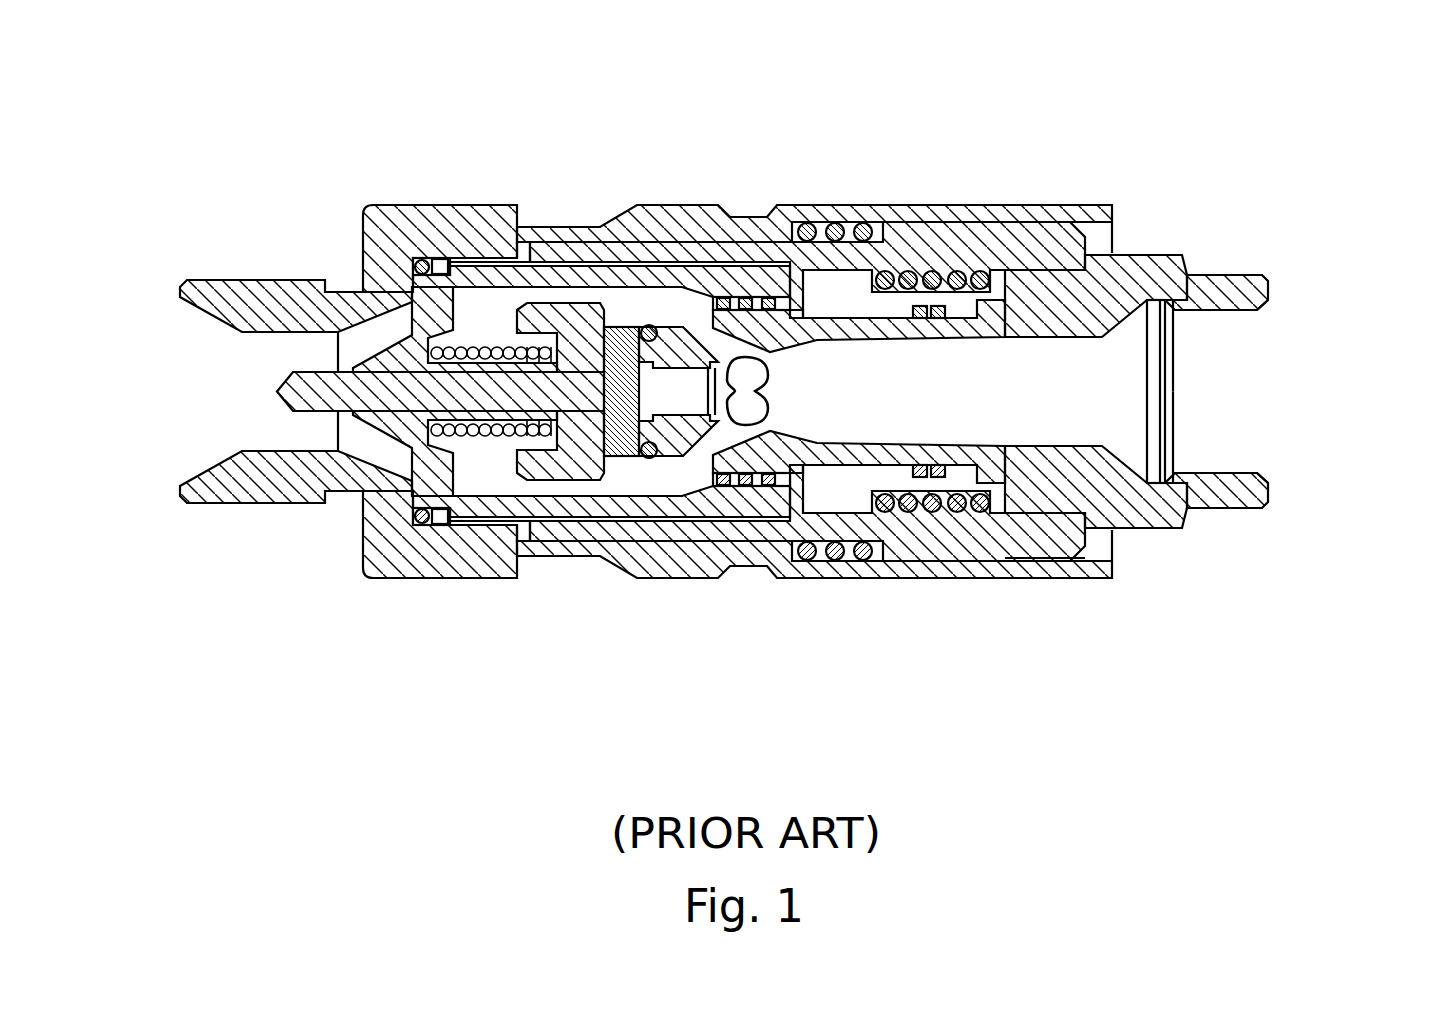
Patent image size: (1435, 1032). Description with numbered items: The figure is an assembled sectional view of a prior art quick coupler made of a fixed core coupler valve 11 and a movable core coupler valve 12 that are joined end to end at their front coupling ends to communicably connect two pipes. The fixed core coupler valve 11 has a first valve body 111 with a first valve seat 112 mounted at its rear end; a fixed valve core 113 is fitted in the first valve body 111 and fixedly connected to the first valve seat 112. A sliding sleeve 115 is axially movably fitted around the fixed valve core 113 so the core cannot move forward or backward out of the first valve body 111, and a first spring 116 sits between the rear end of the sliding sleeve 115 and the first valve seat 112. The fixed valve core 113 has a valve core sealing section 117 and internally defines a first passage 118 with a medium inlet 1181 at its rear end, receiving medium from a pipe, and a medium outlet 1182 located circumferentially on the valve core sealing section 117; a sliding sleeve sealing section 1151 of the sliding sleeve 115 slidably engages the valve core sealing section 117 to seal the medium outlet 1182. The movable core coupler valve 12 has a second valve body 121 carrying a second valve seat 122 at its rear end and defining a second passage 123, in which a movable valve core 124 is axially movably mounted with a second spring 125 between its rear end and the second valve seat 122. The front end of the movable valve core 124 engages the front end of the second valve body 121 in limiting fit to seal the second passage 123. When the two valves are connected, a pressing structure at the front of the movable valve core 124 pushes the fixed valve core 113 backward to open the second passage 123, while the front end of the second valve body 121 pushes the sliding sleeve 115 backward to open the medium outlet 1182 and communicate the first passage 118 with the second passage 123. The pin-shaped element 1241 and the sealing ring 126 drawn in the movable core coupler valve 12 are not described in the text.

The fixed core coupler valve 11 is at (1252, 236).
The first valve body 111 is at (1053, 560).
The first valve seat 112 is at (1155, 280).
The fixed valve core 113 is at (945, 300).
The sliding sleeve 115 is at (807, 293).
The sliding sleeve sealing section 1151 is at (733, 297).
The first spring 116 is at (950, 500).
The valve core sealing section 117 is at (665, 445).
The first passage 118 is at (1113, 553).
The medium inlet 1181 is at (1262, 435).
The medium outlet 1182 is at (740, 425).
The movable core coupler valve 12 is at (170, 233).
The second valve body 121 is at (608, 280).
The second valve seat 122 is at (430, 303).
The second passage 123 is at (613, 480).
The movable valve core 124 is at (540, 317).
The push pin 1241 is at (375, 400).
The second spring 125 is at (470, 432).
The sealing ring 126 is at (677, 290).